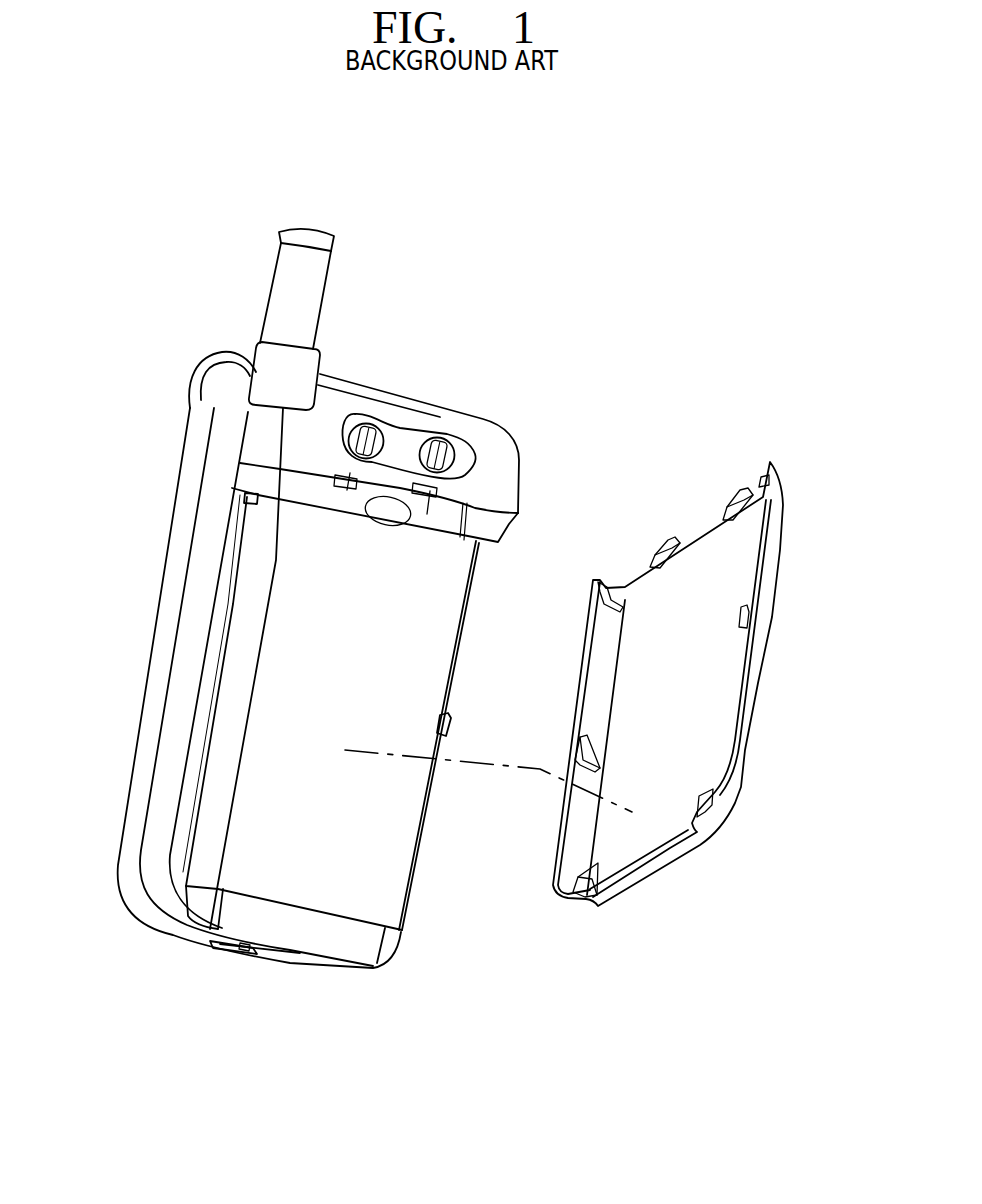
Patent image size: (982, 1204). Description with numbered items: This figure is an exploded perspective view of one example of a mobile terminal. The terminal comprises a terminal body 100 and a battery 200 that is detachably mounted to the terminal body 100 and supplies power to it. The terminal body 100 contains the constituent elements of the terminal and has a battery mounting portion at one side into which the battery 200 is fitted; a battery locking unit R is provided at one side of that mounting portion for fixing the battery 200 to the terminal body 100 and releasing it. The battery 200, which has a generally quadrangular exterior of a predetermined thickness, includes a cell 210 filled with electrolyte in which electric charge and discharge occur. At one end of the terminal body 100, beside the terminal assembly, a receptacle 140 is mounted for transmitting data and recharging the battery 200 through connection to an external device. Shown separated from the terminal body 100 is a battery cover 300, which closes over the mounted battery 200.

The terminal body 100 is at (298, 630).
The battery 200 is at (288, 736).
The cell 210 is at (400, 877).
The receptacle 140 is at (243, 943).
The battery locking unit R is at (414, 424).
The battery cover 300 is at (796, 571).